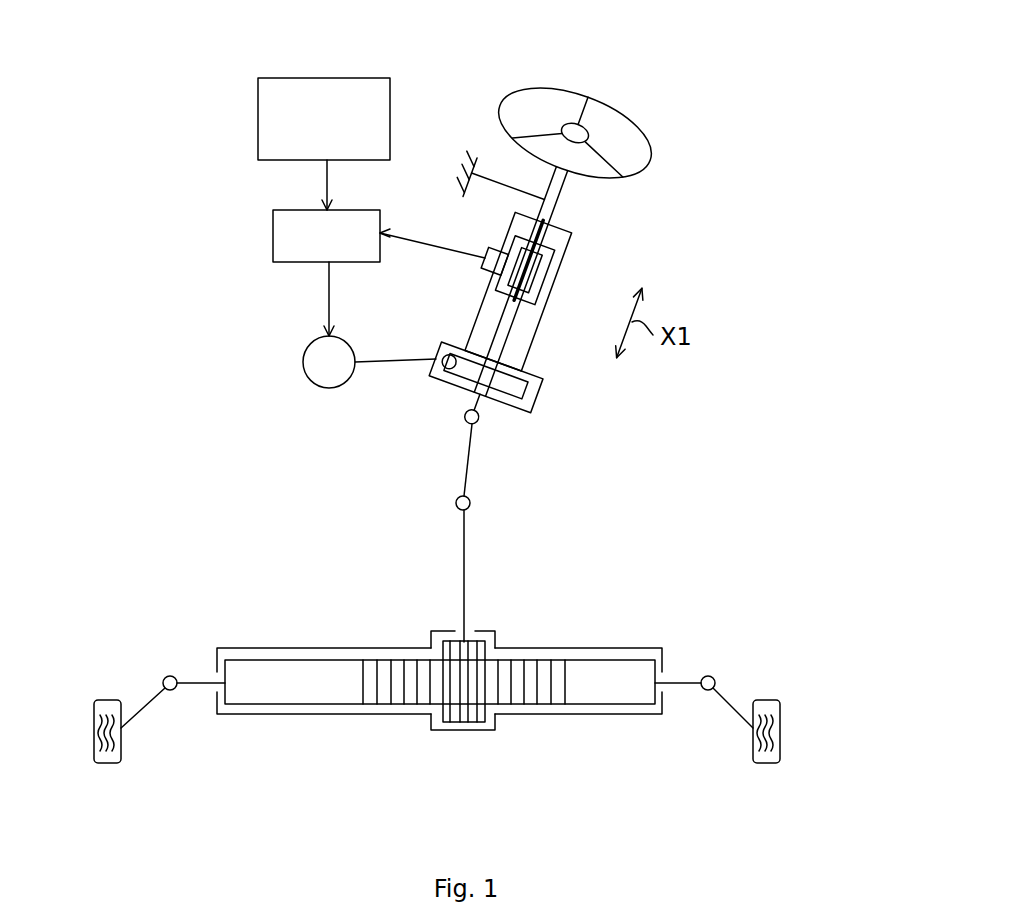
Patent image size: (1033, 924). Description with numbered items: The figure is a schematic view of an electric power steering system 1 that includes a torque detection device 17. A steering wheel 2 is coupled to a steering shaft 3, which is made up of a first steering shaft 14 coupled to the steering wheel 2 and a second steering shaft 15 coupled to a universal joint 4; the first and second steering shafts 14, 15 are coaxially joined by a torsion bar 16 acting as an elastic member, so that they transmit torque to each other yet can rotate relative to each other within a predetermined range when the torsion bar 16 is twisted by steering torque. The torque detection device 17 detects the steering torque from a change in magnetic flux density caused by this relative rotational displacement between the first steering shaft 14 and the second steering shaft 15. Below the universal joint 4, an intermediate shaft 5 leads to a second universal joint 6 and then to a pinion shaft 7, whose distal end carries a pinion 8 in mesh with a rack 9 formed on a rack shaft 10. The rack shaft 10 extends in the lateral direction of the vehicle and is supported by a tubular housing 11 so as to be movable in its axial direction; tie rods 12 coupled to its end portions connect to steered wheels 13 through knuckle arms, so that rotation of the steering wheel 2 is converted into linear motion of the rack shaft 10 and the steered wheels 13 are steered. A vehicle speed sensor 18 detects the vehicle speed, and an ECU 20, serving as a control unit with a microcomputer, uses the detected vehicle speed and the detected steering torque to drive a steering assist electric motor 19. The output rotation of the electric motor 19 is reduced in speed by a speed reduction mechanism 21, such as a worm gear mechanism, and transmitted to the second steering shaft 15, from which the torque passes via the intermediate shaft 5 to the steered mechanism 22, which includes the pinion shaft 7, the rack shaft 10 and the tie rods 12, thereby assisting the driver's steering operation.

The electric power steering system 1 is at (672, 86).
The steering wheel 2 is at (563, 92).
The steering shaft 3 is at (558, 194).
The universal joint 4 is at (480, 420).
The intermediate shaft 5 is at (470, 460).
The universal joint 6 is at (470, 506).
The pinion shaft 7 is at (468, 595).
The pinion 8 is at (475, 713).
The rack 9 is at (410, 697).
The rack shaft 10 is at (533, 706).
The tubular housing 11 is at (350, 648).
The tie rod 12 is at (138, 708).
The steered wheel 13 is at (105, 763).
The first steering shaft 14 is at (552, 212).
The second steering shaft 15 is at (505, 333).
The torsion bar 16 is at (527, 285).
The torque detection device 17 is at (484, 263).
The vehicle speed sensor 18 is at (258, 129).
The steering assist electric motor 19 is at (330, 388).
The ECU 20 is at (273, 233).
The speed reduction mechanism 21 is at (546, 395).
The steered mechanism 22 is at (635, 637).